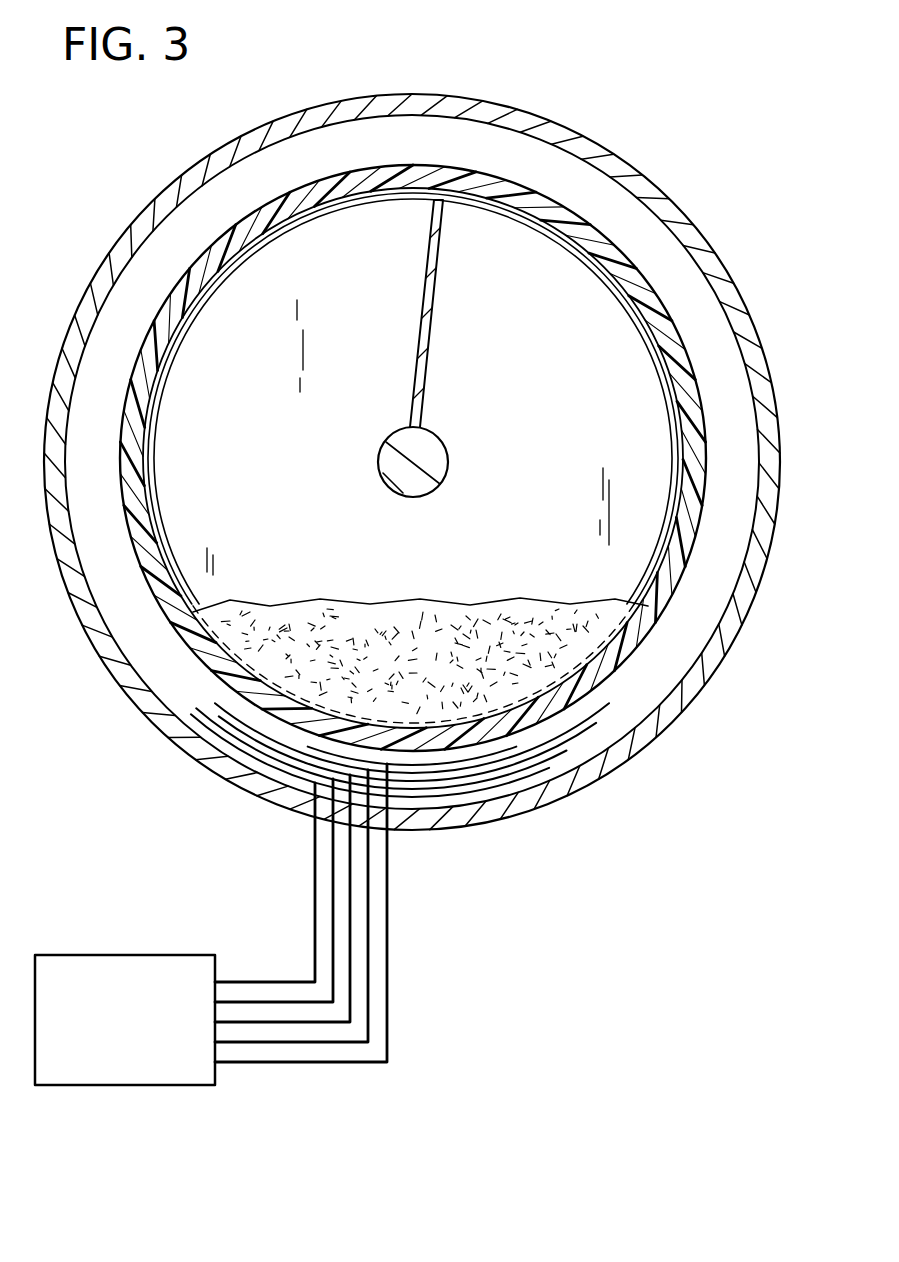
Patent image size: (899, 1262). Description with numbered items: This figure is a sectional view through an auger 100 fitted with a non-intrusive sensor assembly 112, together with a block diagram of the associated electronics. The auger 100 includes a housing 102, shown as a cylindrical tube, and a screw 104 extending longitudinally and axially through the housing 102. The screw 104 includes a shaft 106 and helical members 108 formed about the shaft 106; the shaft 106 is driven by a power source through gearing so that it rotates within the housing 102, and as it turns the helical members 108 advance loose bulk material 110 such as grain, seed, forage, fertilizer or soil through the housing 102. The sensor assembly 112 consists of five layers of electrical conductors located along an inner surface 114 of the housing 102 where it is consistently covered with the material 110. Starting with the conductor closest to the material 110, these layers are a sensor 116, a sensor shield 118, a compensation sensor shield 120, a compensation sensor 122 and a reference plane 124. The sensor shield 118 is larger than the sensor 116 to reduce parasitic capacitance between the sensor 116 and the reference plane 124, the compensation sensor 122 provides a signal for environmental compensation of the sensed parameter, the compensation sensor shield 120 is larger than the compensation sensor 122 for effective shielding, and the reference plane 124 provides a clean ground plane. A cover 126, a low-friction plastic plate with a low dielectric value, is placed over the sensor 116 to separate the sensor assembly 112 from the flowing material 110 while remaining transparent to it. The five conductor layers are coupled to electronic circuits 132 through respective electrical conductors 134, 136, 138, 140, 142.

The auger 100 is at (795, 190).
The housing 102 is at (583, 148).
The screw 104 is at (418, 348).
The shaft 106 is at (379, 456).
The helical members 108 is at (416, 308).
The bulk material 110 is at (432, 665).
The sensor assembly 112 is at (427, 802).
The inner surface 114 is at (722, 603).
The sensor 116 is at (492, 771).
The sensor shield 118 is at (458, 761).
The compensation sensor shield 120 is at (452, 787).
The compensation sensor 122 is at (462, 793).
The reference plane 124 is at (404, 800).
The cover 126 is at (600, 280).
The electronic circuits 132 is at (145, 1035).
The electrical conductor 134 is at (388, 940).
The electrical conductor 136 is at (369, 983).
The electrical conductor 138 is at (349, 910).
The electrical conductor 140 is at (332, 880).
The electrical conductor 142 is at (314, 850).